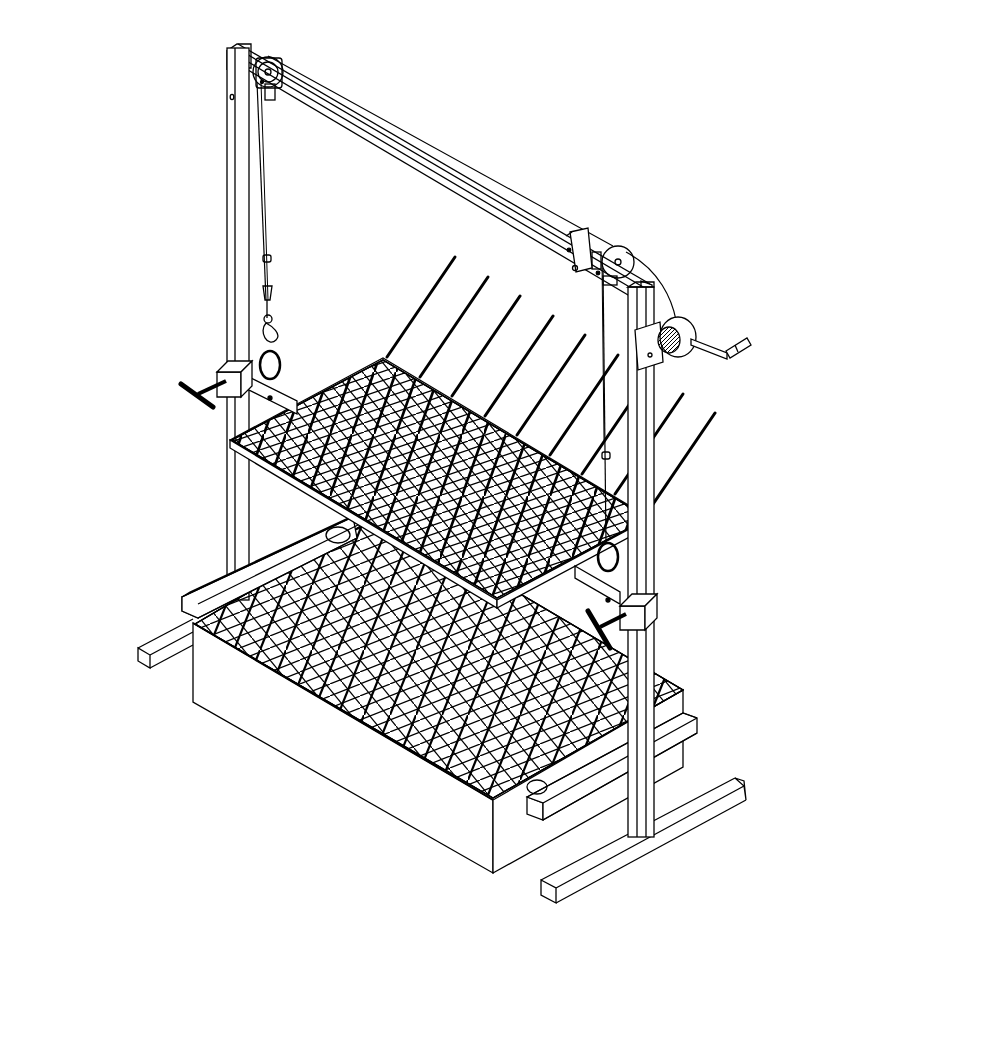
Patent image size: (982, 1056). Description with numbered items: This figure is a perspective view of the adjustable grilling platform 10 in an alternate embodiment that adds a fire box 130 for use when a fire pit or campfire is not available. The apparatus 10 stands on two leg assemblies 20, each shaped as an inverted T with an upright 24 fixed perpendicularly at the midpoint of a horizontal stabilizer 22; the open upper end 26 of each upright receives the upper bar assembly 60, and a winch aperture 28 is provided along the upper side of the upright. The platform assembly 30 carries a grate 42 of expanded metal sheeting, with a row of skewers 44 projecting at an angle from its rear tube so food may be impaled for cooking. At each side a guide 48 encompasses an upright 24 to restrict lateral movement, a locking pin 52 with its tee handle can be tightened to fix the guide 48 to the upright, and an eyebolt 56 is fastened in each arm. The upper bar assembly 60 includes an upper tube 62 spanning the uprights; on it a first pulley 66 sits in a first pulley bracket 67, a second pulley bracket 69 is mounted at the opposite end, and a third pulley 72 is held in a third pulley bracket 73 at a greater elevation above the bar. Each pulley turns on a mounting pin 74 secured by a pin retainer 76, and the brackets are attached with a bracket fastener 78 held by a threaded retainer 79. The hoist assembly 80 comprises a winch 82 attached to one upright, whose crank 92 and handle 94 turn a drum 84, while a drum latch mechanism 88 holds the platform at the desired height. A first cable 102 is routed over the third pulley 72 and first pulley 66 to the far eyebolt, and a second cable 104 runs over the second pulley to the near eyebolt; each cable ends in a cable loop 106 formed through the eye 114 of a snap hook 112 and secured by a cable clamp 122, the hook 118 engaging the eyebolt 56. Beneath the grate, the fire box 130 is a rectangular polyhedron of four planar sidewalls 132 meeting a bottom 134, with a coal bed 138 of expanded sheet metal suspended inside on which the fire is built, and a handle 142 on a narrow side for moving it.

The adjustable grilling platform 10 is at (690, 96).
The leg assembly 20 is at (175, 517).
The horizontal stabilizer 22 is at (148, 642).
The upright 24 is at (233, 143).
The upper end 26 is at (238, 64).
The winch aperture 28 is at (229, 97).
The platform assembly 30 is at (152, 262).
The grate 42 is at (228, 453).
The skewer 44 is at (416, 300).
The guide 48 is at (222, 371).
The locking pin 52 is at (199, 392).
The eyebolt 56 is at (282, 364).
The upper bar assembly 60 is at (497, 150).
The upper tube 62 is at (363, 118).
The first pulley 66 is at (265, 58).
The first pulley bracket 67 is at (275, 60).
The second pulley bracket 69 is at (627, 249).
The third pulley 72 is at (582, 230).
The third pulley bracket 73 is at (567, 232).
The mounting pin 74 is at (262, 82).
The pin retainer 76 is at (272, 100).
The bracket fastener 78 is at (572, 270).
The threaded retainer 79 is at (608, 287).
The hoist assembly 80 is at (710, 240).
The winch 82 is at (652, 328).
The drum 84 is at (680, 354).
The drum latch mechanism 88 is at (682, 322).
The crank 92 is at (716, 347).
The handle 94 is at (749, 342).
The first cable 102 is at (266, 190).
The second cable 104 is at (609, 412).
The cable loop 106 is at (263, 290).
The snap hook 112 is at (272, 320).
The eye 114 is at (264, 315).
The hook 118 is at (280, 342).
The cable clamp 122 is at (272, 259).
The fire box 130 is at (165, 758).
The sidewall 132 is at (441, 822).
The bottom 134 is at (316, 696).
The coal bed 138 is at (397, 742).
The handle 142 is at (524, 812).